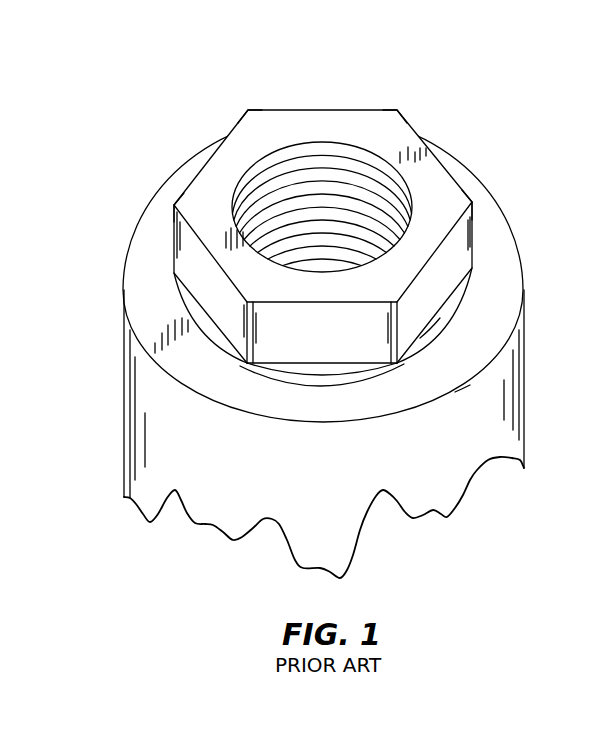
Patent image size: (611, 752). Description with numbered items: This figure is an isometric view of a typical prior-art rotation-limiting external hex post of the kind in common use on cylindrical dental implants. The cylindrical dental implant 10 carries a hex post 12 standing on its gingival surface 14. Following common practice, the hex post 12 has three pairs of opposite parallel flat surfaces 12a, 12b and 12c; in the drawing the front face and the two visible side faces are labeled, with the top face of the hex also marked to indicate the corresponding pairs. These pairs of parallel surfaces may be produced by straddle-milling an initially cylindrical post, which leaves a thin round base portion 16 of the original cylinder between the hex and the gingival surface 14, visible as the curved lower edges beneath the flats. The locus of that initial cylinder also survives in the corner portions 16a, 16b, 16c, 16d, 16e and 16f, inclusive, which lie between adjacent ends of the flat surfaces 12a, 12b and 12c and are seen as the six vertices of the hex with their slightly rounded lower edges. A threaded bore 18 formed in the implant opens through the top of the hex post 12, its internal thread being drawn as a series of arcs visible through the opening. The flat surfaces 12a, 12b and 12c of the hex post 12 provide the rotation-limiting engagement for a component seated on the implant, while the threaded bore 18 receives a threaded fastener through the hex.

The cylindrical dental implant 10 is at (183, 454).
The hex post 12 is at (210, 238).
The flat surfaces 12a is at (346, 343).
The flat surfaces 12b is at (444, 308).
The flat surfaces 12c is at (240, 308).
The gingival surface 14 is at (150, 302).
The round base portion 16 is at (443, 317).
The corner portion 16a is at (470, 395).
The corner portion 16b is at (472, 202).
The corner portion 16c is at (397, 110).
The corner portion 16d is at (248, 110).
The corner portion 16e is at (172, 205).
The corner portion 16f is at (243, 367).
The threaded bore 18 is at (333, 170).